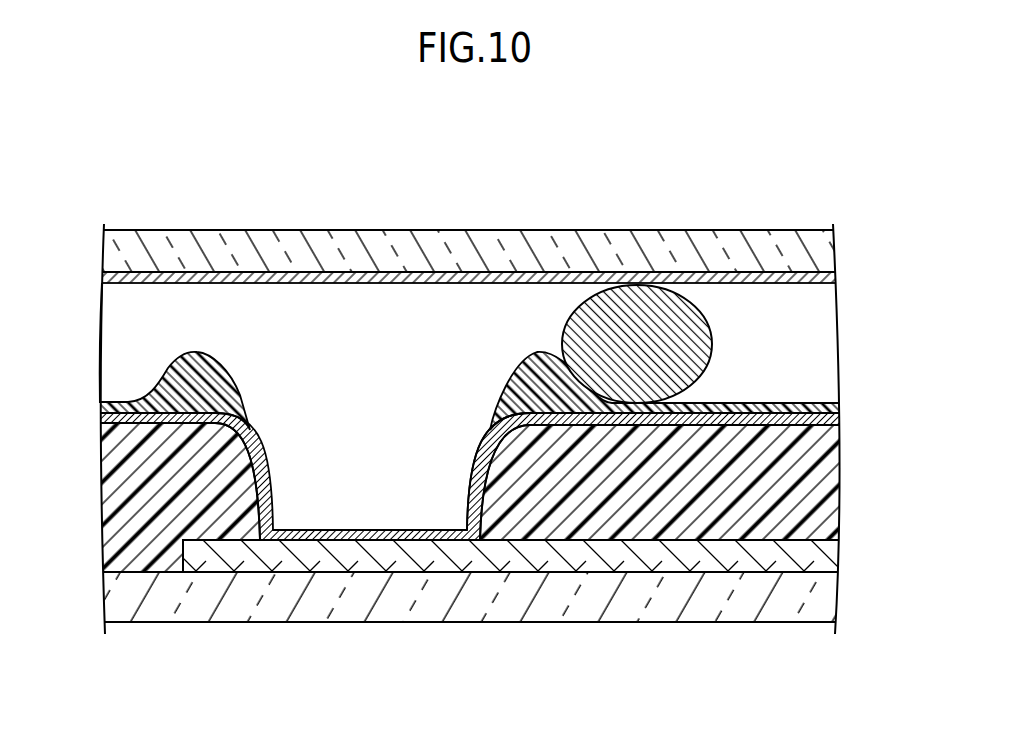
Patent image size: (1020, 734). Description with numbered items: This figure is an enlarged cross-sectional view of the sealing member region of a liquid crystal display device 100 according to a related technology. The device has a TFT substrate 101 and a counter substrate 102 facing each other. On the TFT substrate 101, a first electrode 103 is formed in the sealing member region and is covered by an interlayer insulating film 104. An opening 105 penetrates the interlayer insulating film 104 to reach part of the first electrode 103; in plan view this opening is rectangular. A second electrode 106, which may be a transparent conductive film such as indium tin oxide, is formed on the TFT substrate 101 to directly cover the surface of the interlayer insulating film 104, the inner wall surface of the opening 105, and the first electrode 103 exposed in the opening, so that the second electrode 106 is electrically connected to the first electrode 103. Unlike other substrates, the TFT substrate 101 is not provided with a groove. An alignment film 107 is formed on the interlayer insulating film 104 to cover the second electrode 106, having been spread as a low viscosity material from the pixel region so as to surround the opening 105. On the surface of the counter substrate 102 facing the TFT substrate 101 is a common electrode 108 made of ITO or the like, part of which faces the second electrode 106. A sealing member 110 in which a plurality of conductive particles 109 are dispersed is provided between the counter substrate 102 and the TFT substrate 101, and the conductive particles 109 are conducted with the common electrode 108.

The liquid crystal display device 100 is at (458, 139).
The TFT substrate 101 is at (196, 624).
The counter substrate 102 is at (178, 230).
The first electrode 103 is at (834, 550).
The interlayer insulating film 104 is at (830, 478).
The opening 105 is at (465, 473).
The second electrode 106 is at (836, 420).
The alignment film 107 is at (104, 407).
The common electrode 108 is at (836, 283).
The conductive particles 109 is at (577, 306).
The sealing member 110 is at (108, 343).